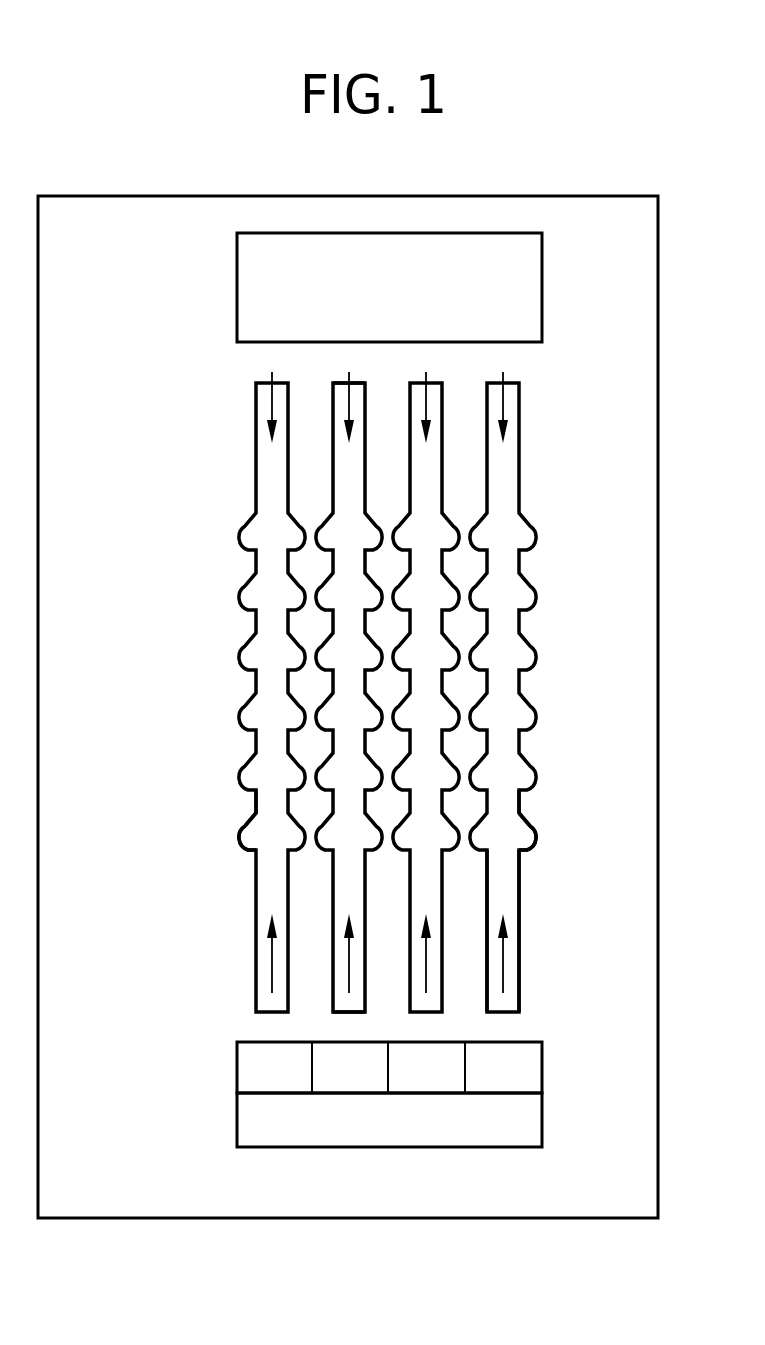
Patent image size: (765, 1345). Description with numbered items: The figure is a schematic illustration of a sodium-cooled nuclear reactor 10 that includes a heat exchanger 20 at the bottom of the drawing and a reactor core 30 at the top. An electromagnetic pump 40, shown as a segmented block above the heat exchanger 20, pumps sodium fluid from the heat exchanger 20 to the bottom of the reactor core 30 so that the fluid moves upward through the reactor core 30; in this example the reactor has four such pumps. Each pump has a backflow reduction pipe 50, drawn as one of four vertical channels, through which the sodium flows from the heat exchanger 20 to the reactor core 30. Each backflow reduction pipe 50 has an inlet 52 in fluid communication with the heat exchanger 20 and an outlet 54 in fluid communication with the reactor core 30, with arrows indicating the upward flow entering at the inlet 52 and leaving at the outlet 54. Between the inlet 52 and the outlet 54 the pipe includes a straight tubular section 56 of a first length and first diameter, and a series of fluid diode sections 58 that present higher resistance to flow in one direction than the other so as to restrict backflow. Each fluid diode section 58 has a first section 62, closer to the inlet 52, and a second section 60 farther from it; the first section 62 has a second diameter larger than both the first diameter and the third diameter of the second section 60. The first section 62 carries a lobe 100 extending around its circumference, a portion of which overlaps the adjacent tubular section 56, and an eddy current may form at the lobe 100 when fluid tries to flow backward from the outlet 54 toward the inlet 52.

The sodium-cooled nuclear reactor 10 is at (640, 468).
The heat exchanger 20 is at (542, 1118).
The reactor core 30 is at (530, 267).
The electromagnetic pump 40 is at (527, 1060).
The backflow reduction pipe 50 is at (520, 686).
The inlet 52 is at (333, 1013).
The outlet 54 is at (340, 381).
The tubular section 56 is at (505, 890).
The fluid diode section 58 is at (248, 847).
The second section 60 is at (522, 797).
The first section 62 is at (518, 826).
The lobe 100 is at (538, 838).